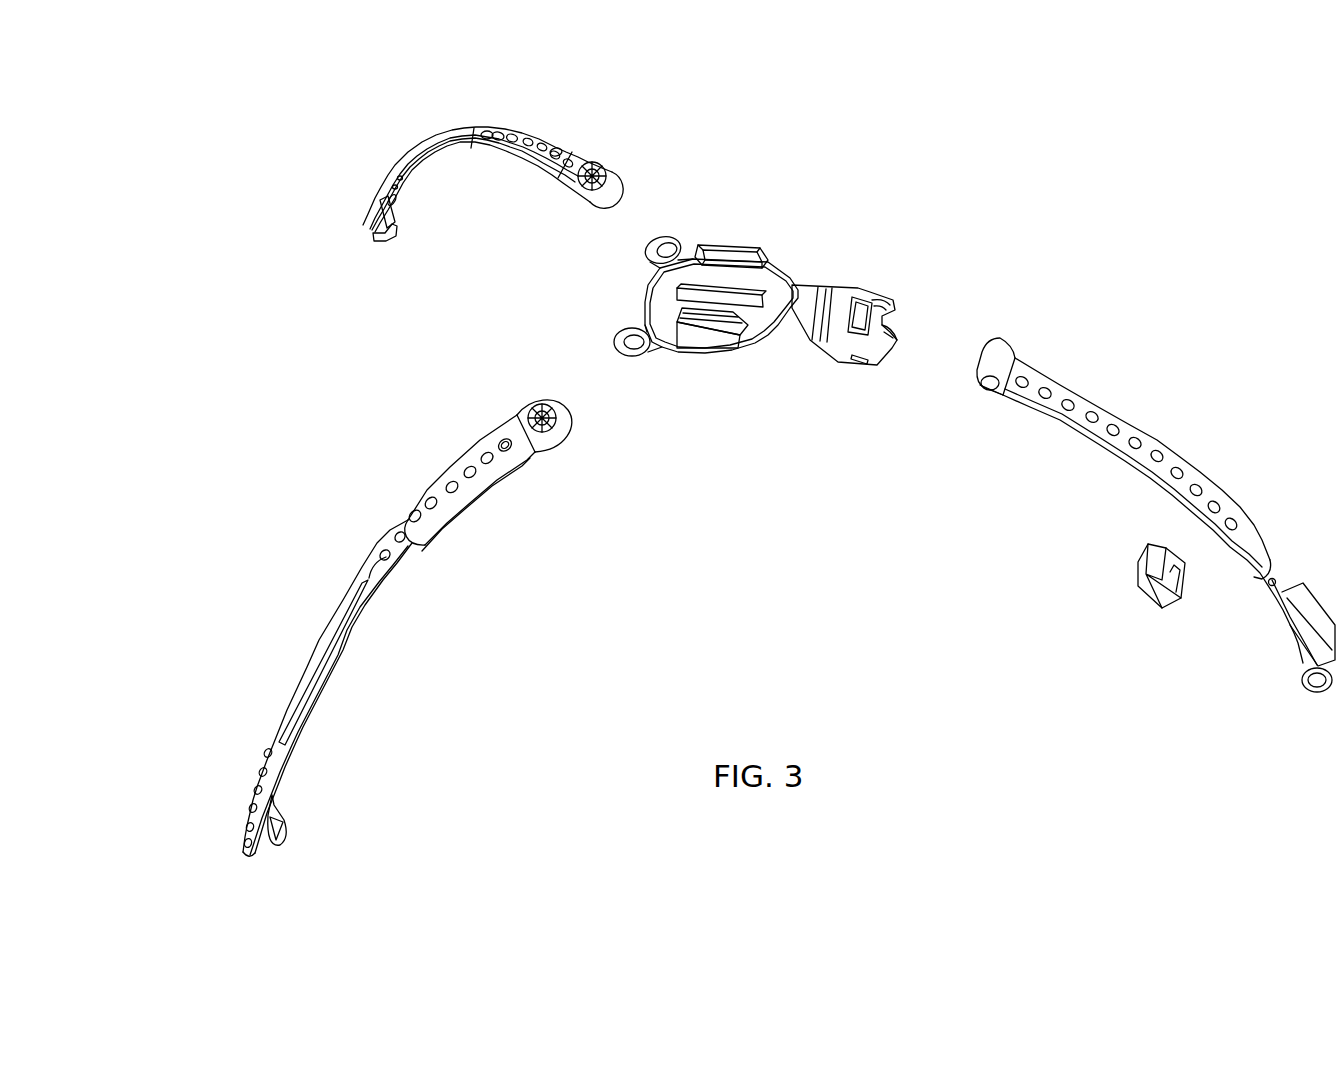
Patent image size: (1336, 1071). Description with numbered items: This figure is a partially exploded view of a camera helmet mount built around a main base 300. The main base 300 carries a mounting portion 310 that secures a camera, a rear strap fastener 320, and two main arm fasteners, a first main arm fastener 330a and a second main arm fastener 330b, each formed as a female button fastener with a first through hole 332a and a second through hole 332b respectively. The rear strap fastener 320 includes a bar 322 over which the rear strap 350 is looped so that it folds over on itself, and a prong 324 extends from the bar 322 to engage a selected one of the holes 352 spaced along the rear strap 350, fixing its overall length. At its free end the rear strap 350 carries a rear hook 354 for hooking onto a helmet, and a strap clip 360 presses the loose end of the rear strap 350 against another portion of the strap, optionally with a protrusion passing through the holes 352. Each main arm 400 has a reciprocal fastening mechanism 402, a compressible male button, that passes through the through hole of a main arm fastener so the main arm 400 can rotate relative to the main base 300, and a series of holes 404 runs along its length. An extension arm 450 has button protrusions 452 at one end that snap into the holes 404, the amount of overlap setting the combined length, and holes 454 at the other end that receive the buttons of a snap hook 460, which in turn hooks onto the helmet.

The main base 300 is at (790, 246).
The mounting portion 310 is at (720, 300).
The rear strap fastener 320 is at (851, 286).
The bar 322 is at (872, 315).
The prong 324 is at (898, 342).
The first main arm fastener 330a is at (641, 366).
The second main arm fastener 330b is at (668, 236).
The first through hole 332a is at (632, 342).
The second through hole 332b is at (660, 256).
The rear strap 350 is at (1086, 458).
The holes 352 is at (1072, 400).
The rear hook 354 is at (1322, 690).
The strap clip 360 is at (1145, 612).
The main arm 400 is at (548, 190).
The reciprocal fastening mechanism 402 is at (596, 166).
The holes 404 is at (556, 148).
The extension arm 450 is at (400, 128).
The button protrusions 452 is at (488, 122).
The holes 454 is at (410, 172).
The snap hook 460 is at (386, 234).